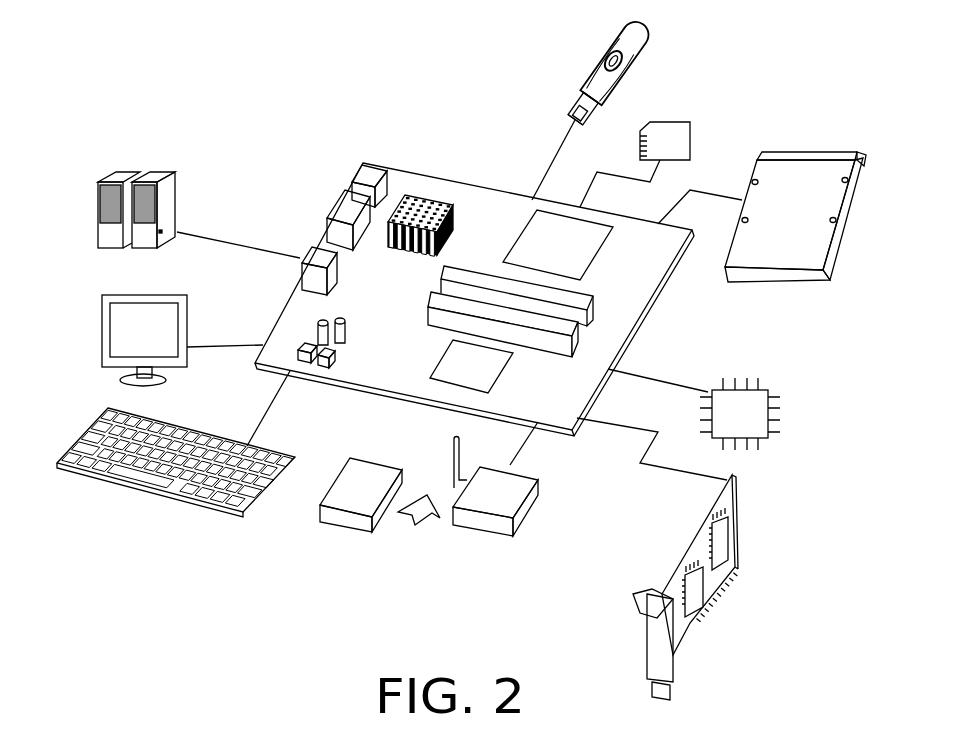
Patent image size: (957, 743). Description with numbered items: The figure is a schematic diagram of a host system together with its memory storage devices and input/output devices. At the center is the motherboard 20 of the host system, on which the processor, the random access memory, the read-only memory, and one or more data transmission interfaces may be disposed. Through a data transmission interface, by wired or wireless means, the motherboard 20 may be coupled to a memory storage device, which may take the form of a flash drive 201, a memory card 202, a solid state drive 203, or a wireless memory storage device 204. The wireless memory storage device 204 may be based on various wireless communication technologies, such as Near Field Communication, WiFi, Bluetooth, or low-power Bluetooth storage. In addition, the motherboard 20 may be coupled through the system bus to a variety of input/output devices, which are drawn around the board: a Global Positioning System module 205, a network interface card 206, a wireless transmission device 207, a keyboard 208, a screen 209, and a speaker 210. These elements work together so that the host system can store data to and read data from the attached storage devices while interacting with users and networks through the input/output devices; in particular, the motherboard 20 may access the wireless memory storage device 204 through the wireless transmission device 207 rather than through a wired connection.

The motherboard 20 is at (475, 197).
The flash drive 201 is at (594, 61).
The memory card 202 is at (690, 129).
The solid state drive 203 is at (810, 148).
The wireless memory storage device 204 is at (334, 471).
The Global Positioning System module 205 is at (773, 412).
The network interface card 206 is at (737, 533).
The wireless transmission device 207 is at (527, 517).
The keyboard 208 is at (180, 503).
The screen 209 is at (102, 348).
The speaker 210 is at (97, 233).